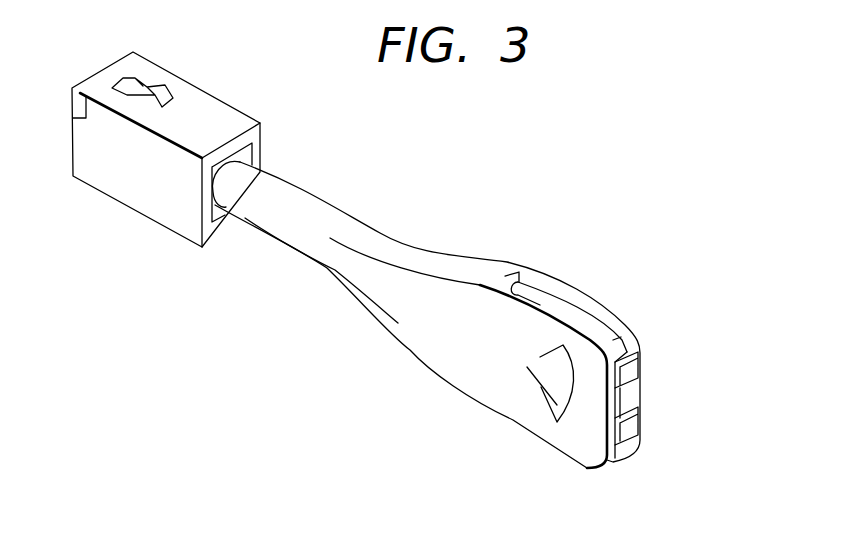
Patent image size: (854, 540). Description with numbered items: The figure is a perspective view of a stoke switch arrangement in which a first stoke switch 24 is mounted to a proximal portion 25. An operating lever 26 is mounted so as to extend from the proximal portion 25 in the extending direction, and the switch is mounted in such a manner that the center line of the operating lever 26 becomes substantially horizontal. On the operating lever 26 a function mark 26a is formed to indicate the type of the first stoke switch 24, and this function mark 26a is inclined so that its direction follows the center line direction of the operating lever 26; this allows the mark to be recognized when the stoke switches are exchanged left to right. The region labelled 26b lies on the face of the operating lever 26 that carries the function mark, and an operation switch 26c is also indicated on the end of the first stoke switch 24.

The first stoke switch 24 is at (420, 228).
The proximal portion 25 is at (207, 95).
The operating lever 26 is at (345, 232).
The function mark 26a is at (453, 323).
The operating face with wiper symbol 26b is at (567, 422).
The operation switch 26c is at (632, 373).